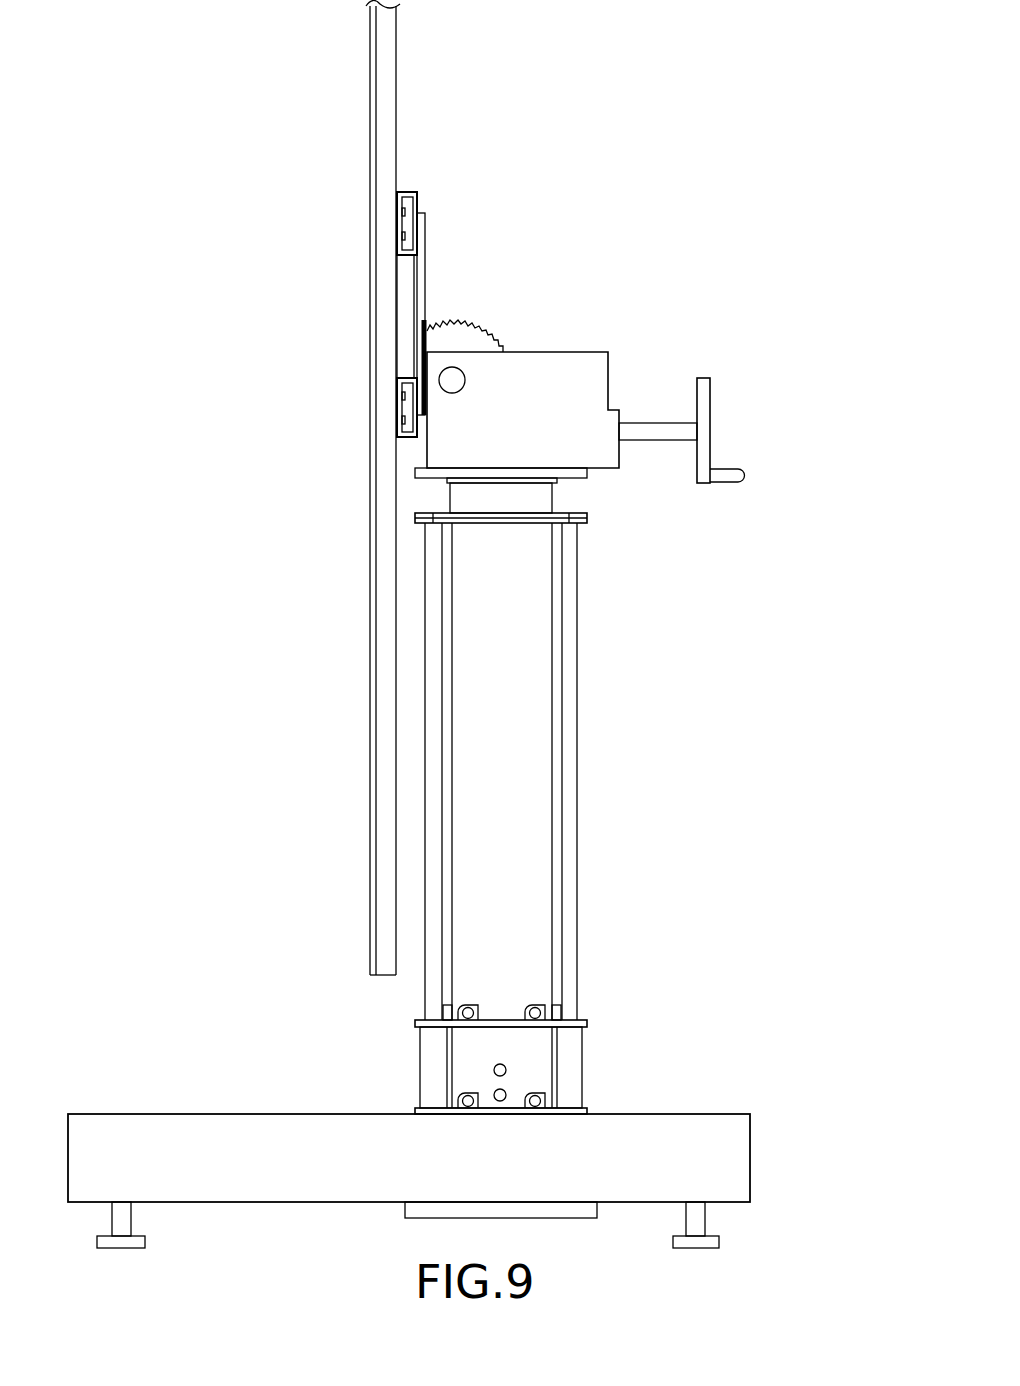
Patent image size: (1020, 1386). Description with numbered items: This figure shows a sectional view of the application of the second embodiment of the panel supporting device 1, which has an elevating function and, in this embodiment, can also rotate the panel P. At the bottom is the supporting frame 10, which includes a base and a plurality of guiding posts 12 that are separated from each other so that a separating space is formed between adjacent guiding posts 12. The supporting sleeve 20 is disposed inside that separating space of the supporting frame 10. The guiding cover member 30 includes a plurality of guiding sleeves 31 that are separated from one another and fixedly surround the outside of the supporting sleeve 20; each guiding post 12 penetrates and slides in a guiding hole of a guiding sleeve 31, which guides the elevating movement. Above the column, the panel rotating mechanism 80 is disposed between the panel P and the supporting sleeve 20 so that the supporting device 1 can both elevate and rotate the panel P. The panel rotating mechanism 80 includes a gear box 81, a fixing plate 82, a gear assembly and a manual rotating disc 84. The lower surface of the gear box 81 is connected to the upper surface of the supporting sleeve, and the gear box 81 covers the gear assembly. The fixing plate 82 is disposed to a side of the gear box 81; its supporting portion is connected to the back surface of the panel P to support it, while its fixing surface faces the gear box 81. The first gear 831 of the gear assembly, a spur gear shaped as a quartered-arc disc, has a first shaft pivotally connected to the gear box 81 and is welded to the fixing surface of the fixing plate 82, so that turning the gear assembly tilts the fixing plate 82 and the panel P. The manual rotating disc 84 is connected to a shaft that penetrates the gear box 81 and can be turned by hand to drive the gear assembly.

The panel P is at (385, 88).
The panel supporting device 1 is at (615, 673).
The supporting frame 10 is at (671, 1113).
The guiding posts 12 is at (567, 818).
The supporting sleeve 20 is at (548, 756).
The guiding cover member 30 is at (585, 1012).
The guiding sleeves 31 is at (573, 1060).
The panel rotating mechanism 80 is at (617, 338).
The gear box 81 is at (551, 388).
The fixing plate 82 is at (407, 192).
The first gear 831 is at (464, 328).
The manual rotating disc 84 is at (703, 397).